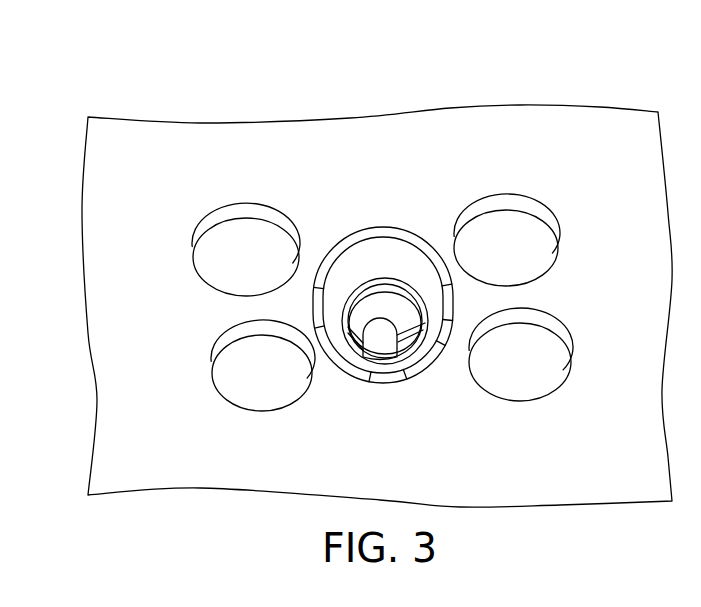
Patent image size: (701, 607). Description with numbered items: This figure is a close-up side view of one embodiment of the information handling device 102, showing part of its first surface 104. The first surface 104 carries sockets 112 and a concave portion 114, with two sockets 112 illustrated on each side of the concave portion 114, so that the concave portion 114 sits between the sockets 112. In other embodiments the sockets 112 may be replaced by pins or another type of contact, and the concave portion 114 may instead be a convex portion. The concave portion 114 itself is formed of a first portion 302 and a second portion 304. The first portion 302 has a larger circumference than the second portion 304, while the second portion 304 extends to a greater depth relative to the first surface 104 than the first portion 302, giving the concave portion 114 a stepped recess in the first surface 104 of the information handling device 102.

The information handling device 102 is at (74, 72).
The first surface 104 is at (202, 435).
The sockets 112 is at (540, 259).
The concave portion 114 is at (386, 383).
The first portion 302 is at (378, 252).
The second portion 304 is at (398, 308).